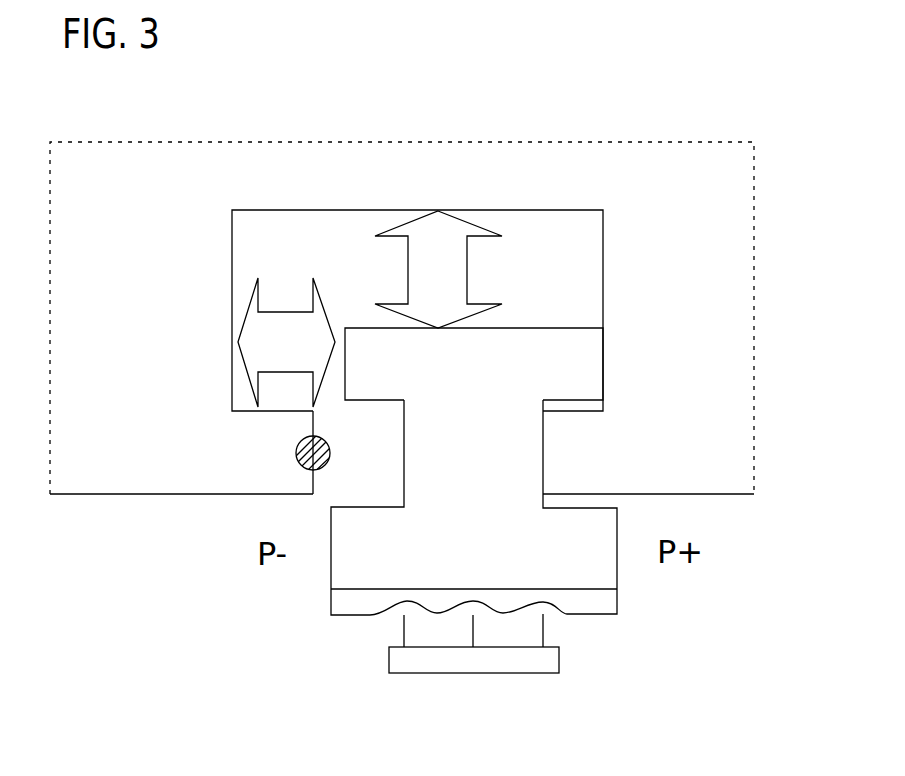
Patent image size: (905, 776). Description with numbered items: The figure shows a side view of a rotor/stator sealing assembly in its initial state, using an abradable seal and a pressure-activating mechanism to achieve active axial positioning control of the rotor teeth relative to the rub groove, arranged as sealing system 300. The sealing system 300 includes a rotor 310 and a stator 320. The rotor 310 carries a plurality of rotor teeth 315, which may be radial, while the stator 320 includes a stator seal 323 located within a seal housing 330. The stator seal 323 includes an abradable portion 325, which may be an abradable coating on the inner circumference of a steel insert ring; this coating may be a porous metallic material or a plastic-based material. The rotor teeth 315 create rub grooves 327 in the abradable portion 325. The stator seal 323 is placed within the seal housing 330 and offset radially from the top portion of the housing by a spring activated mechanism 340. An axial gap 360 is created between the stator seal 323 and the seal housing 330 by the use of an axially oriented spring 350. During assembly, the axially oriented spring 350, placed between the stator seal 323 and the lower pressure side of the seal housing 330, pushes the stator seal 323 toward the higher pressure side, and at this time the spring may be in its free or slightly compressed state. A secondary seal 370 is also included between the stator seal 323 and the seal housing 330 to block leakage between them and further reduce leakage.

The sealing system 300 is at (270, 751).
The rotor 310 is at (559, 660).
The rotor teeth 315 is at (398, 628).
The stator 320 is at (754, 314).
The stator seal 323 is at (597, 367).
The abradable portion 325 is at (617, 600).
The rub grooves 327 is at (380, 600).
The seal housing 330 is at (232, 262).
The spring activated mechanism 340 is at (467, 263).
The axially oriented spring 350 is at (252, 352).
The axial gap 360 is at (347, 423).
The secondary seal 370 is at (297, 452).